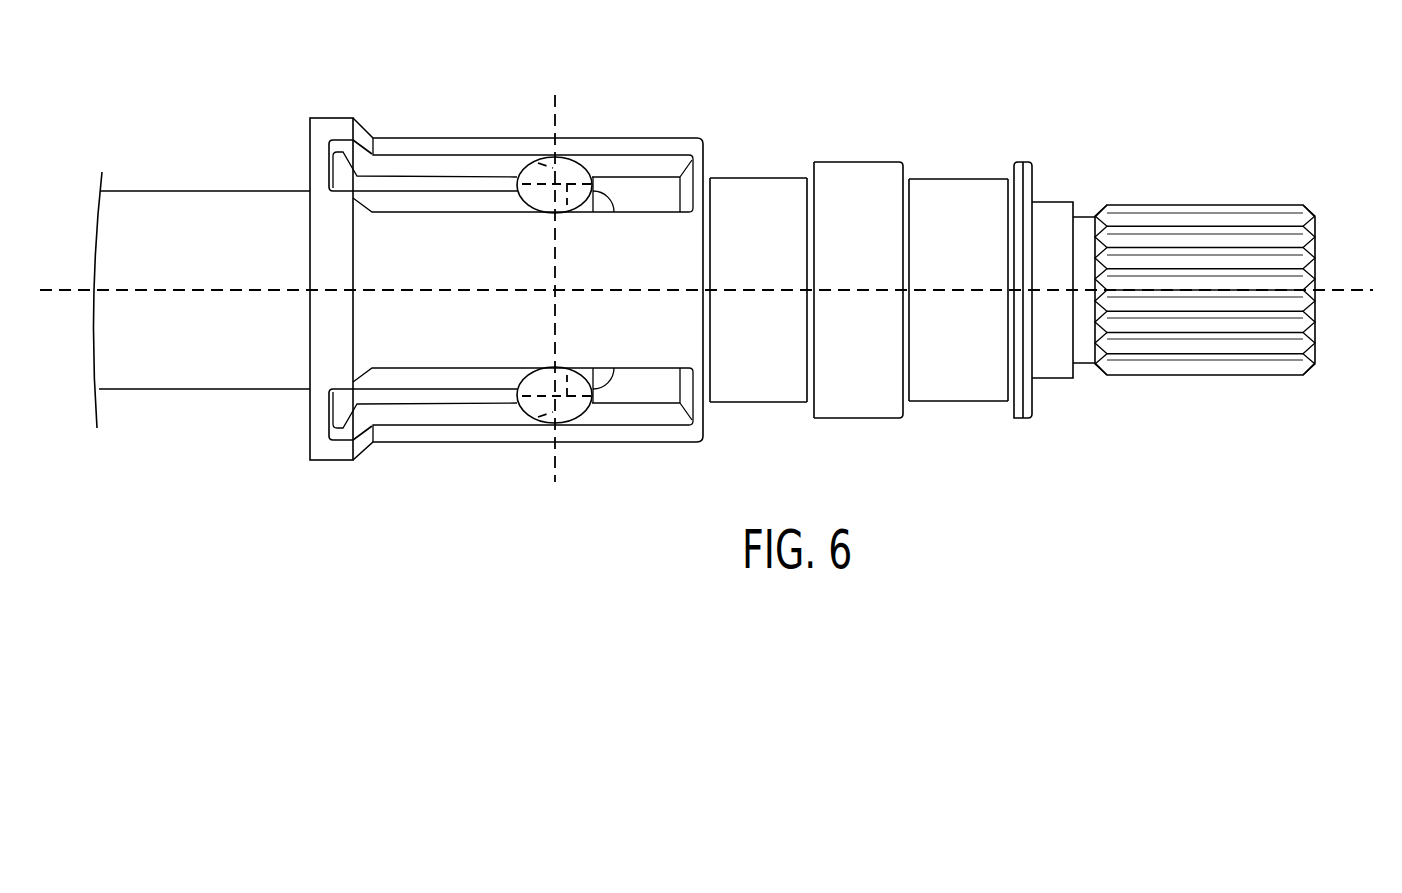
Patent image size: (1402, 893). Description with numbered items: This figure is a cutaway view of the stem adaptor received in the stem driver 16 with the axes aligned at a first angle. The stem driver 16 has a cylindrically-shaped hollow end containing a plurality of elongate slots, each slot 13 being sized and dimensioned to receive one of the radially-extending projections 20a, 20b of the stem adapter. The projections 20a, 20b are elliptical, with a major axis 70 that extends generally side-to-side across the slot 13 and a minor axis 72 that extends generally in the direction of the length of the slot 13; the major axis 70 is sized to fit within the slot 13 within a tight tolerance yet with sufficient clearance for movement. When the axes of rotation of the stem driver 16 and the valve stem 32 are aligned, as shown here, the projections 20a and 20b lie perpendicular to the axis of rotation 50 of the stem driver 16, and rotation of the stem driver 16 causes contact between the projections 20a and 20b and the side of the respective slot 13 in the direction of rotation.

The slot 13 is at (653, 193).
The radially-extending projection 20a is at (520, 177).
The radially-extending projection 20b is at (520, 407).
The major axis 70 is at (527, 158).
The minor axis 72 is at (567, 217).
The valve stem 32 is at (203, 392).
The stem driver 16 is at (1054, 382).
The axis of rotation 50 is at (1342, 288).